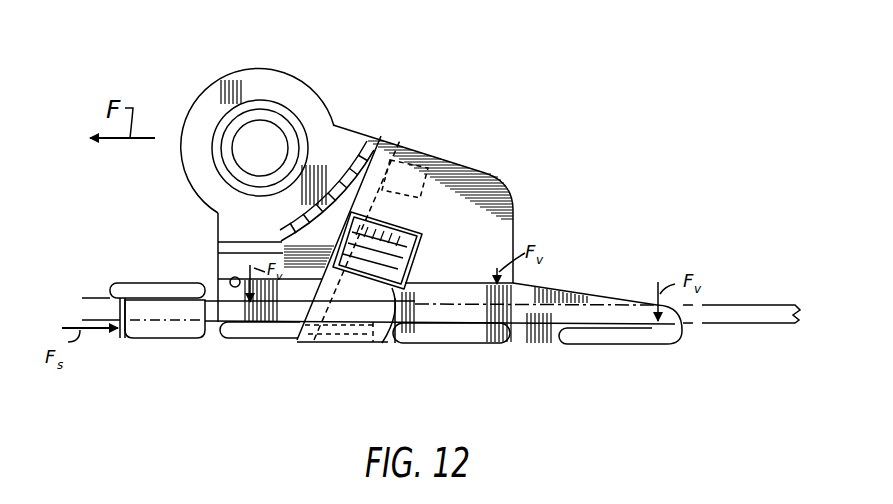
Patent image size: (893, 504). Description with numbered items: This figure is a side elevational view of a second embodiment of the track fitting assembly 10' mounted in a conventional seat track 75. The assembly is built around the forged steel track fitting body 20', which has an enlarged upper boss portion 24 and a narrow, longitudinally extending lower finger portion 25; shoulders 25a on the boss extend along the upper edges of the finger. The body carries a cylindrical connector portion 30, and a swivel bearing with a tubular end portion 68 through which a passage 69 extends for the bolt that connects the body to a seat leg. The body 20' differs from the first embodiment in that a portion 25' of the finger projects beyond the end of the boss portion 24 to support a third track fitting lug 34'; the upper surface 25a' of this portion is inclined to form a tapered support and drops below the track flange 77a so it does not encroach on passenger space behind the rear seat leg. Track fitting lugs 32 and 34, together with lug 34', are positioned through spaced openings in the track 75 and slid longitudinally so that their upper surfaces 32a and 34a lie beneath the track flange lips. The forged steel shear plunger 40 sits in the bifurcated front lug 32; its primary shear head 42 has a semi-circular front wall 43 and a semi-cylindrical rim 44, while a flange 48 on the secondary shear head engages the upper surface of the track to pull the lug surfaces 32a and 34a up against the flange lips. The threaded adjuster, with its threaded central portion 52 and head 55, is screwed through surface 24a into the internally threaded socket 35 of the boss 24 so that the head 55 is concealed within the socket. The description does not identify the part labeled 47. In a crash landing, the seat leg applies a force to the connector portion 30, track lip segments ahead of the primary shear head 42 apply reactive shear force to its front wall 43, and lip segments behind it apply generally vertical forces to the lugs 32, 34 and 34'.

The track fitting body 20' is at (303, 180).
The passage 69 is at (266, 128).
The track fitting assembly 10' is at (420, 122).
The cylindrical connector portion 30 is at (200, 96).
The tubular end portion 68 is at (232, 148).
The surface 24a is at (392, 135).
The head 55 is at (420, 200).
The internally threaded socket 35 is at (440, 158).
The enlarged upper boss portion 24 is at (502, 183).
The lower finger portion 25 is at (482, 272).
The threaded central portion 52 is at (423, 235).
The finger portion 25' is at (585, 257).
The upper surface 25a' is at (607, 285).
The flange portion 77a is at (742, 302).
The shear plunger 40 is at (119, 280).
The shoulders 25a is at (216, 278).
The seat track 75 is at (100, 292).
The front wall 43 is at (107, 340).
The primary shear head 42 is at (135, 340).
The semi-cylindrical rim 44 is at (157, 340).
The front track fitting lug 32 is at (223, 340).
The upper surface 32a is at (278, 340).
The hidden portion 47 is at (370, 342).
The flange 48 is at (391, 343).
The upper surface 34a is at (478, 332).
The track fitting lug 34 is at (469, 362).
The third track fitting lug 34' is at (621, 360).